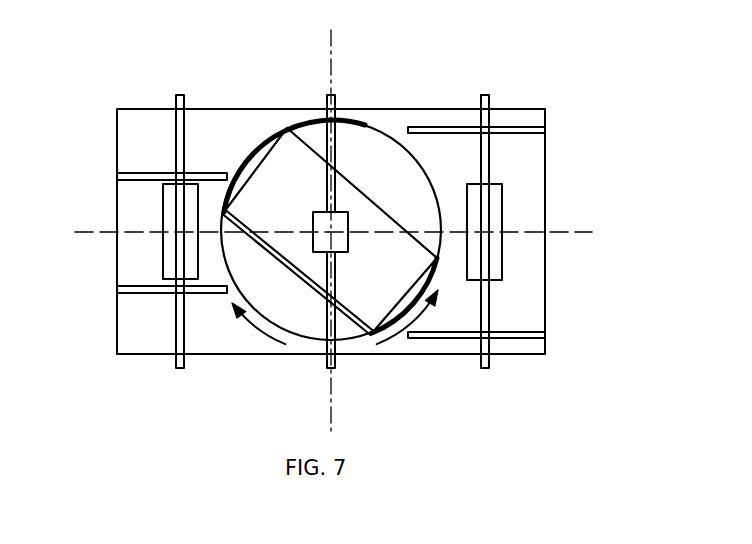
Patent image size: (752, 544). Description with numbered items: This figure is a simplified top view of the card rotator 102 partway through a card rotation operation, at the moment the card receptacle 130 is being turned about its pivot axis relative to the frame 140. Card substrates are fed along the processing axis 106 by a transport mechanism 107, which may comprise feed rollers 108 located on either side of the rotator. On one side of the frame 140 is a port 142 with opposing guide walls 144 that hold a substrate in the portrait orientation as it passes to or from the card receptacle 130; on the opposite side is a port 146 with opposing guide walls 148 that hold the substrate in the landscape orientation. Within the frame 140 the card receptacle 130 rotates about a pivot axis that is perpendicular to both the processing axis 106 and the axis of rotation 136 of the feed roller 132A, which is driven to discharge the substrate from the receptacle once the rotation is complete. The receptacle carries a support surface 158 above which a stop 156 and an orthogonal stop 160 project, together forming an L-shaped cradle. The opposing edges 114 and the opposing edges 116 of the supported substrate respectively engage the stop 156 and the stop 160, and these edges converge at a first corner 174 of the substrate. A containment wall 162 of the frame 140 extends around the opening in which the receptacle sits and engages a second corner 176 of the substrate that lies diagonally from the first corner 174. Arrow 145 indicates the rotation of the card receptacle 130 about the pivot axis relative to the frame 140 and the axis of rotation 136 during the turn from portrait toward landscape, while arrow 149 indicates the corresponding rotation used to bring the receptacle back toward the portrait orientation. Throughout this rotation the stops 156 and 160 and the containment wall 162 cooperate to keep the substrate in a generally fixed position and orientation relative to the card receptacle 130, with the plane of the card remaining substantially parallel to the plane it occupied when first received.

The card rotator 102 is at (141, 62).
The processing axis 106 is at (586, 232).
The transport mechanism 107 is at (155, 318).
The feed rollers 108 is at (185, 192).
The opposing edges 114 is at (260, 164).
The opposing edges 116 is at (366, 196).
The card receptacle 130 is at (408, 172).
The feed roller 132A is at (313, 214).
The axis of rotation 136 is at (334, 52).
The frame 140 is at (218, 354).
The port 142 is at (137, 207).
The guide walls 144 is at (160, 175).
The arrow 145 is at (257, 348).
The port 146 is at (518, 152).
The guide walls 148 is at (446, 129).
The arrow 149 is at (397, 342).
The stop 156 is at (404, 296).
The support surface 158 is at (363, 148).
The stop 160 is at (302, 278).
The containment wall 162 is at (318, 118).
The first corner 174 is at (402, 340).
The second corner 176 is at (287, 137).